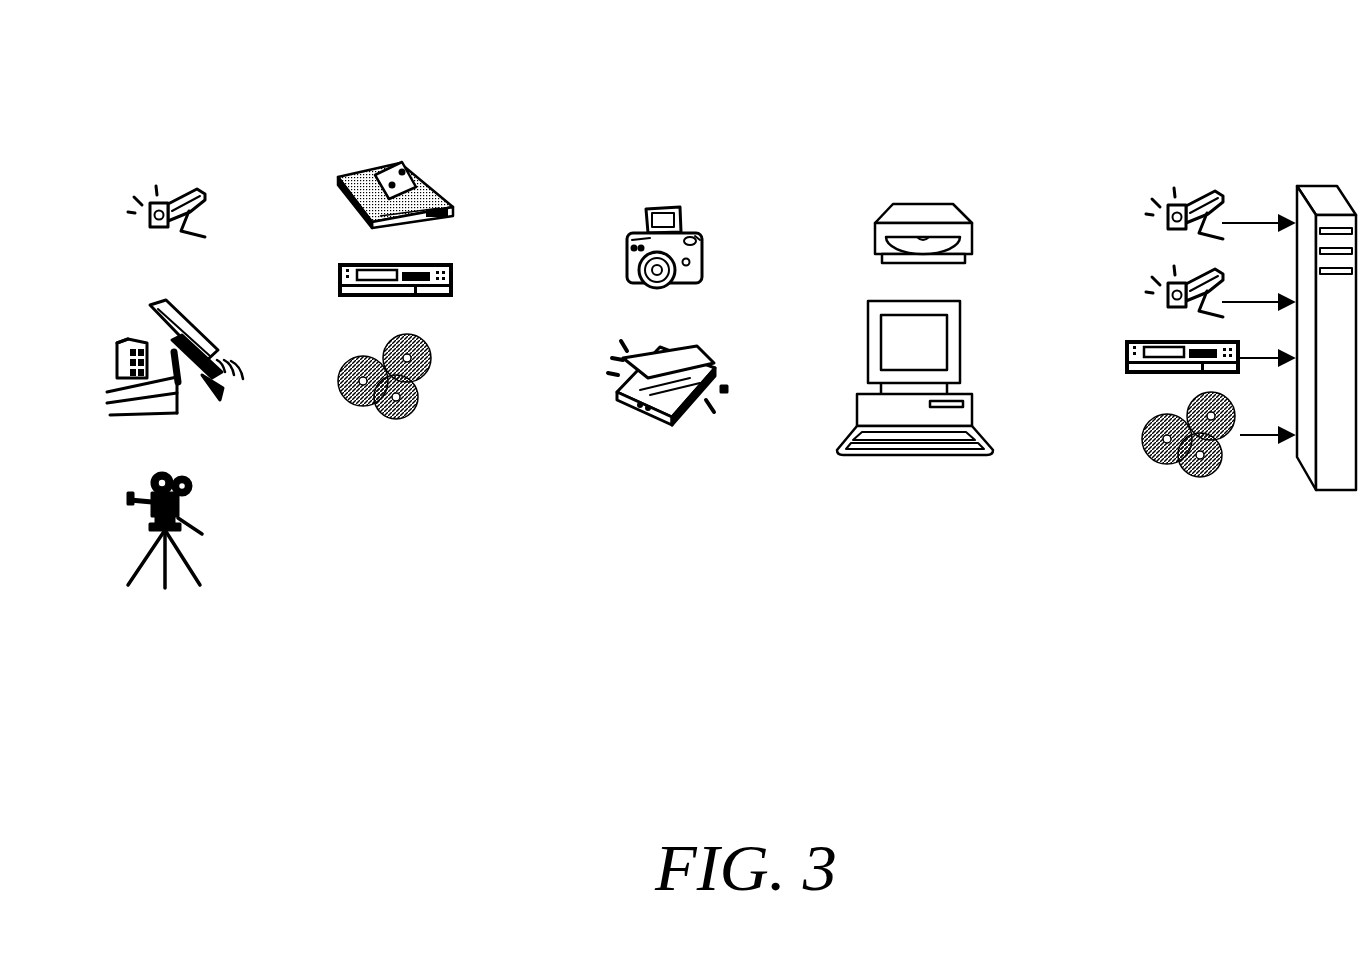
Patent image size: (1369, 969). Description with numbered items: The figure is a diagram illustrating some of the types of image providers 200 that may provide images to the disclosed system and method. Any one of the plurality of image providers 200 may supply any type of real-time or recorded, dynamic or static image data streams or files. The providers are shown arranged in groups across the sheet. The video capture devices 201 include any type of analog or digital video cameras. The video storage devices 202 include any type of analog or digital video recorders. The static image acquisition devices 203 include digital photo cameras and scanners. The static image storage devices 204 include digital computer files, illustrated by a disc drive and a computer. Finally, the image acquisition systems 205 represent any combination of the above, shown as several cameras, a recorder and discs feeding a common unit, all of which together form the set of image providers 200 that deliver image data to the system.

The image providers 200 is at (432, 680).
The video capture devices 201 is at (265, 178).
The video storage devices 202 is at (492, 167).
The static image acquisition devices 203 is at (729, 200).
The static image storage devices 204 is at (996, 196).
The image acquisition systems 205 is at (1283, 168).